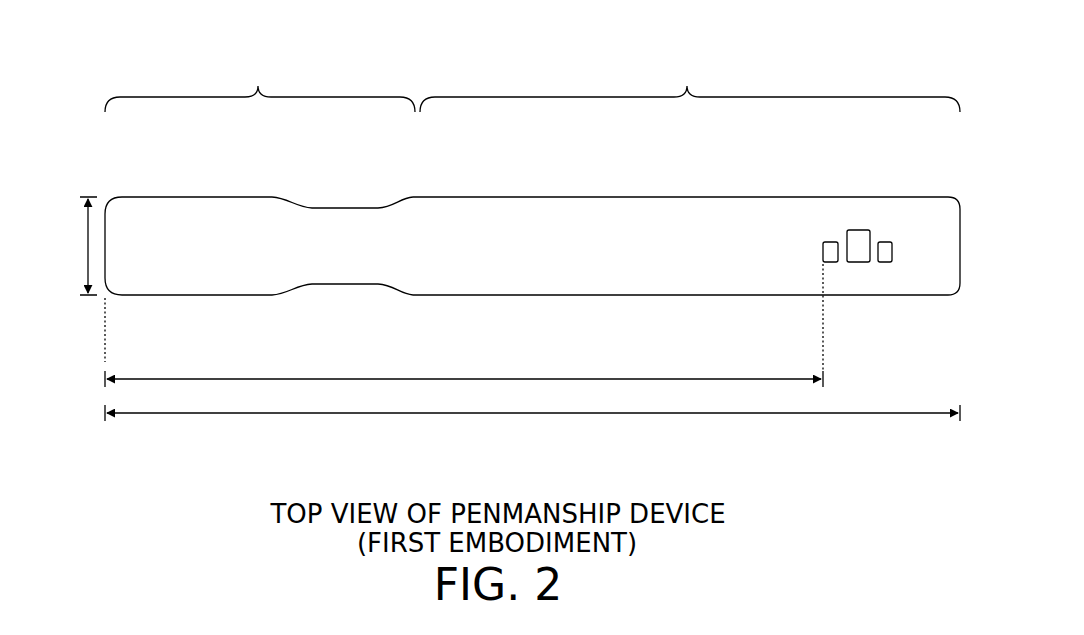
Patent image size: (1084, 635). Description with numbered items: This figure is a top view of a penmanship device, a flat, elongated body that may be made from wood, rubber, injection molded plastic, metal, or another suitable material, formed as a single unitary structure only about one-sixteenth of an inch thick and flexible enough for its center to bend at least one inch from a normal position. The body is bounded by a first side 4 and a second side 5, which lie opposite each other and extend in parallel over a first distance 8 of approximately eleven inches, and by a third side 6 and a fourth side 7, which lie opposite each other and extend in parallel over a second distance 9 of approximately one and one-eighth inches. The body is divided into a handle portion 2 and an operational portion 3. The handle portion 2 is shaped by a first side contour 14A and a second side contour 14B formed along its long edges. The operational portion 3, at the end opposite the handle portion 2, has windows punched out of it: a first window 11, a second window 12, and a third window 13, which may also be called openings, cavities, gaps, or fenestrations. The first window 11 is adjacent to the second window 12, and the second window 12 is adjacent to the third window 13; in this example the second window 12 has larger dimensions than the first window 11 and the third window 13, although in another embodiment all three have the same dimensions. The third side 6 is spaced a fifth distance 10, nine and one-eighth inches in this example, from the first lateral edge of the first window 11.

The handle portion 2 is at (260, 80).
The operational portion 3 is at (690, 77).
The first side 4 is at (524, 197).
The second side 5 is at (602, 295).
The third side 6 is at (105, 245).
The fourth side 7 is at (960, 246).
The first distance 8 is at (529, 414).
The second distance 9 is at (87, 245).
The fifth distance 10 is at (487, 378).
The first window 11 is at (822, 236).
The second window 12 is at (857, 222).
The third window 13 is at (878, 266).
The first side contour 14A is at (350, 208).
The second side contour 14B is at (345, 284).